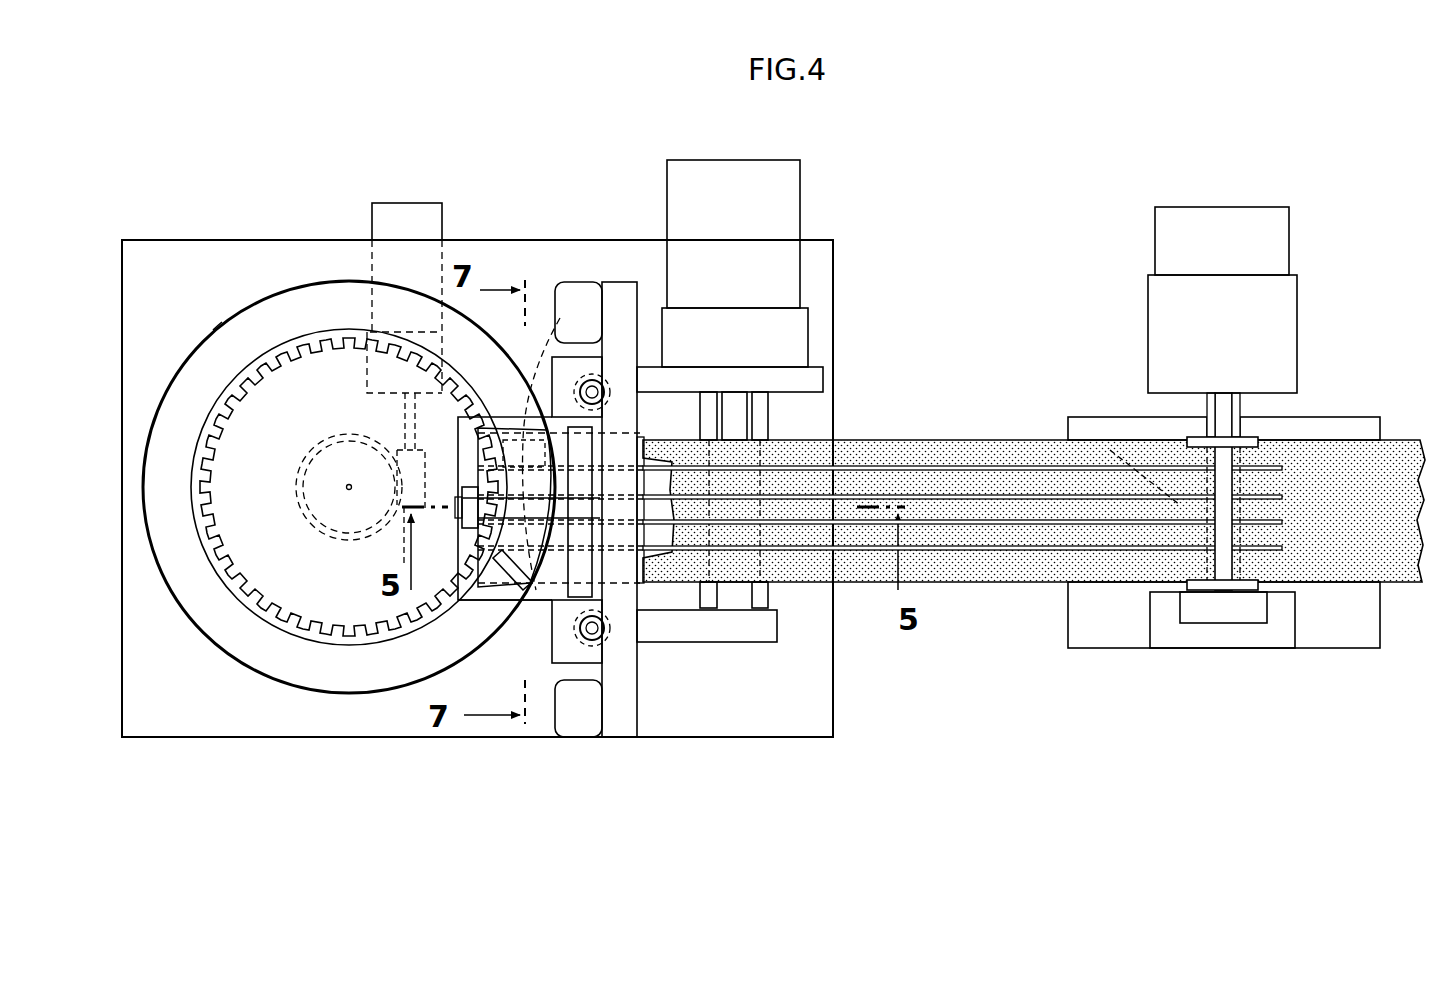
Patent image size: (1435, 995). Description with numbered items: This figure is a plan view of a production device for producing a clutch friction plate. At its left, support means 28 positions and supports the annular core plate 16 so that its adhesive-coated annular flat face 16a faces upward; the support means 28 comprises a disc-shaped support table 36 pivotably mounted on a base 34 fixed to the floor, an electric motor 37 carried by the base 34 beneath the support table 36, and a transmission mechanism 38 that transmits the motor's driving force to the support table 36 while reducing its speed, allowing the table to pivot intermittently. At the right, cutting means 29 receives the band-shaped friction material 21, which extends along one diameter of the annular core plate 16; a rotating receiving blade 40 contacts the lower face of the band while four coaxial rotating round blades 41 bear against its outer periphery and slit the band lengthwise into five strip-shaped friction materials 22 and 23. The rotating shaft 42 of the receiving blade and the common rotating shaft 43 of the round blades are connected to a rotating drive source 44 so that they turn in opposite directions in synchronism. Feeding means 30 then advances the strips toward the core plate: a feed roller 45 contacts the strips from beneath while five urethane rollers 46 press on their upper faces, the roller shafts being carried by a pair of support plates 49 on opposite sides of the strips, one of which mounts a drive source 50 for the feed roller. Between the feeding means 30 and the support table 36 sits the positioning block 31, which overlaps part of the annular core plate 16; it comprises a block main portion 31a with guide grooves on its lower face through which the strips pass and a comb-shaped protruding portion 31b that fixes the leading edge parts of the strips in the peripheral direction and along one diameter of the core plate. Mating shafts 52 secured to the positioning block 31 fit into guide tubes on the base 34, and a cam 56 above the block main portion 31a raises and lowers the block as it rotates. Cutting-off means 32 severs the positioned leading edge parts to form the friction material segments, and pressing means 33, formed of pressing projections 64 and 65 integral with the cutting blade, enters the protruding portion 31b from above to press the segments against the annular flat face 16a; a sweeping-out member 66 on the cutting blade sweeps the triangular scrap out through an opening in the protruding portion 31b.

The annular core plate 16 is at (362, 678).
The annular flat face 16a is at (215, 335).
The band-shaped friction material 21 is at (1355, 447).
The strip-shaped friction material 22 is at (975, 565).
The strip-shaped friction material 23 is at (960, 498).
The support means 28 is at (340, 695).
The cutting means 29 is at (1137, 611).
The feeding means 30 is at (782, 594).
The positioning block 31 is at (576, 662).
The block main portion 31a is at (645, 655).
The protruding portion 31b is at (467, 478).
The cutting-off means 32 is at (508, 414).
The pressing means 33 is at (457, 463).
The base 34 is at (218, 728).
The support table 36 is at (335, 281).
The electric motor 37 is at (418, 208).
The transmission mechanism 38 is at (395, 476).
The rotating receiving blade 40 is at (1110, 450).
The rotating round blade 41 is at (1268, 530).
The rotating shaft 42 is at (1240, 410).
The rotating shaft 43 is at (1220, 410).
The rotating drive source 44 is at (1235, 252).
The feed roller 45 is at (766, 425).
The urethane roller 46 is at (745, 580).
The support plate 49 is at (780, 372).
The drive source 50 is at (748, 242).
The mating shaft 52 is at (600, 385).
The cam 56 is at (580, 448).
The pressing projection 64 is at (533, 597).
The pressing projection 65 is at (562, 509).
The sweeping-out member 66 is at (520, 590).